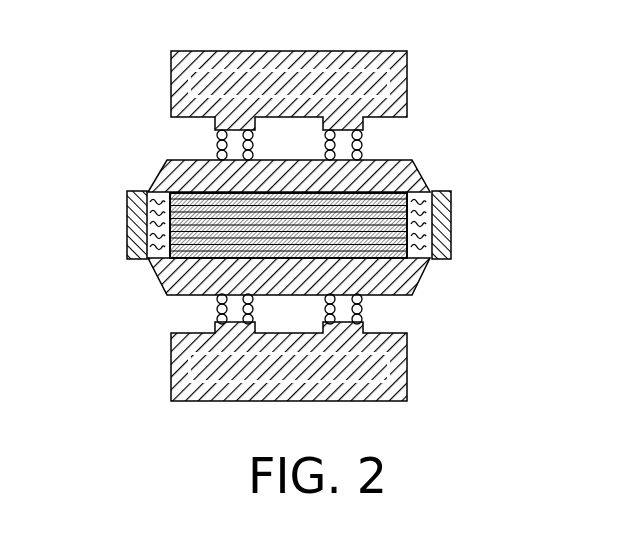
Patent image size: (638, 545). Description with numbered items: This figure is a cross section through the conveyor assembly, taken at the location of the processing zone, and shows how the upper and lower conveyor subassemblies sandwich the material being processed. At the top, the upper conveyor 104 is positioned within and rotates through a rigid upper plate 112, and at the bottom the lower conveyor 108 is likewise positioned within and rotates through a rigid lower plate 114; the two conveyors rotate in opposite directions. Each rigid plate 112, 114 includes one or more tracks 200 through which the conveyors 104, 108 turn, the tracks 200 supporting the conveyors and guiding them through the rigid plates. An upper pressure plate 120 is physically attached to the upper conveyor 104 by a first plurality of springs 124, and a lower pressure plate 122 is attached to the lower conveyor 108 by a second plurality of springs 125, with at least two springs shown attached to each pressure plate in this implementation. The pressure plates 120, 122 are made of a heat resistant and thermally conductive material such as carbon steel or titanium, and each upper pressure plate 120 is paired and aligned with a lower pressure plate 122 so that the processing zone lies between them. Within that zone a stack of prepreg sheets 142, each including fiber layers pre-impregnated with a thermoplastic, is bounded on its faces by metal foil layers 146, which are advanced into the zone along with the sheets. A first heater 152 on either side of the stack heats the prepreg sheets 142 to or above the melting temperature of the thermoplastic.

The upper conveyor 104 is at (387, 78).
The lower conveyor 108 is at (387, 365).
The rigid upper plate 112 is at (220, 51).
The rigid lower plate 114 is at (192, 402).
The upper pressure plate 120 is at (170, 158).
The lower pressure plate 122 is at (167, 293).
The first plurality of springs 124 is at (362, 145).
The second plurality of springs 125 is at (362, 306).
The prepreg sheet 142 is at (419, 208).
The metal foil layer 146 is at (150, 194).
The first heater 152 is at (127, 222).
The track 200 is at (177, 72).